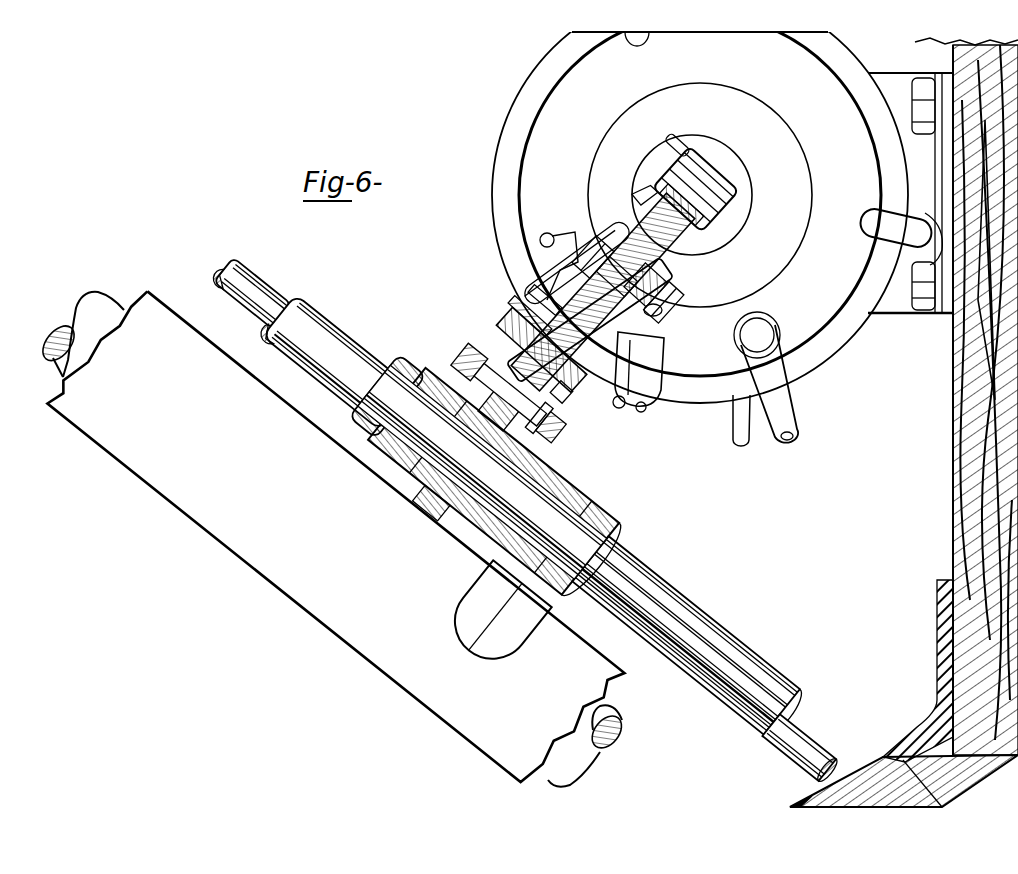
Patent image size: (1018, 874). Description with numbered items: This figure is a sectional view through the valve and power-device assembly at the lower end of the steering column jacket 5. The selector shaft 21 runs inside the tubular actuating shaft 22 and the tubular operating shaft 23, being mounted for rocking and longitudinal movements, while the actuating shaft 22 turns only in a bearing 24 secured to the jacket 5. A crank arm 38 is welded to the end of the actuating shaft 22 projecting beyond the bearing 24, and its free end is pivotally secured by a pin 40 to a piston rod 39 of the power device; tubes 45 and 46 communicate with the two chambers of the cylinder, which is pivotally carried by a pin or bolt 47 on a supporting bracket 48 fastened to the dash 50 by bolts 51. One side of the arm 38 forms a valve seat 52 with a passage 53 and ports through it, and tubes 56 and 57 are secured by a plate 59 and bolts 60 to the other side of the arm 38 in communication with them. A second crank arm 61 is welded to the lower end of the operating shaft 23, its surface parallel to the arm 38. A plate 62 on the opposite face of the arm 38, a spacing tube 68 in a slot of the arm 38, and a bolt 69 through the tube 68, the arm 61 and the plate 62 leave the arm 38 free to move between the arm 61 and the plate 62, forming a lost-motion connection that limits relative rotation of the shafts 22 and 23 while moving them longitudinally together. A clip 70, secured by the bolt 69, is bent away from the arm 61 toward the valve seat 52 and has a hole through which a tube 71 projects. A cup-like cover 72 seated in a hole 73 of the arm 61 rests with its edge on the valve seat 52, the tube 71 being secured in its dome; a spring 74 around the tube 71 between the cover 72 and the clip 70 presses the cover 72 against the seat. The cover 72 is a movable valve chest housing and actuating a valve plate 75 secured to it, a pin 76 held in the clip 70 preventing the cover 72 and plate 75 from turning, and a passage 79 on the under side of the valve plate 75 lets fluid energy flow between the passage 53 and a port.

The steering column jacket 5 is at (352, 628).
The selector shaft 21 is at (258, 298).
The actuating shaft 22 is at (703, 638).
The operating shaft 23 is at (352, 345).
The bearing 24 is at (530, 605).
The crank arm 38 is at (575, 352).
The piston rod 39 is at (742, 186).
The pin 40 is at (708, 178).
The tube 45 is at (745, 448).
The tube 46 is at (794, 444).
The pin or bolt 47 is at (822, 360).
The supporting bracket 48 is at (893, 88).
The dash 50 is at (952, 352).
The bolts 51 is at (925, 118).
The valve seat 52 is at (680, 262).
The passage 53 is at (654, 303).
The tube 56 is at (642, 377).
The tube 57 is at (632, 410).
The plate 59 is at (657, 296).
The bolts 60 is at (662, 313).
The crank arm 61 is at (500, 352).
The plate 62 is at (588, 392).
The spacing tube 68 is at (562, 393).
The bolt 69 is at (556, 428).
The clip 70 is at (532, 330).
The tube 71 is at (560, 262).
The cup-like cover 72 is at (612, 236).
The hole 73 is at (622, 238).
The spring 74 is at (542, 290).
The valve plate 75 is at (588, 257).
The pin 76 is at (522, 308).
The passage 79 is at (617, 276).